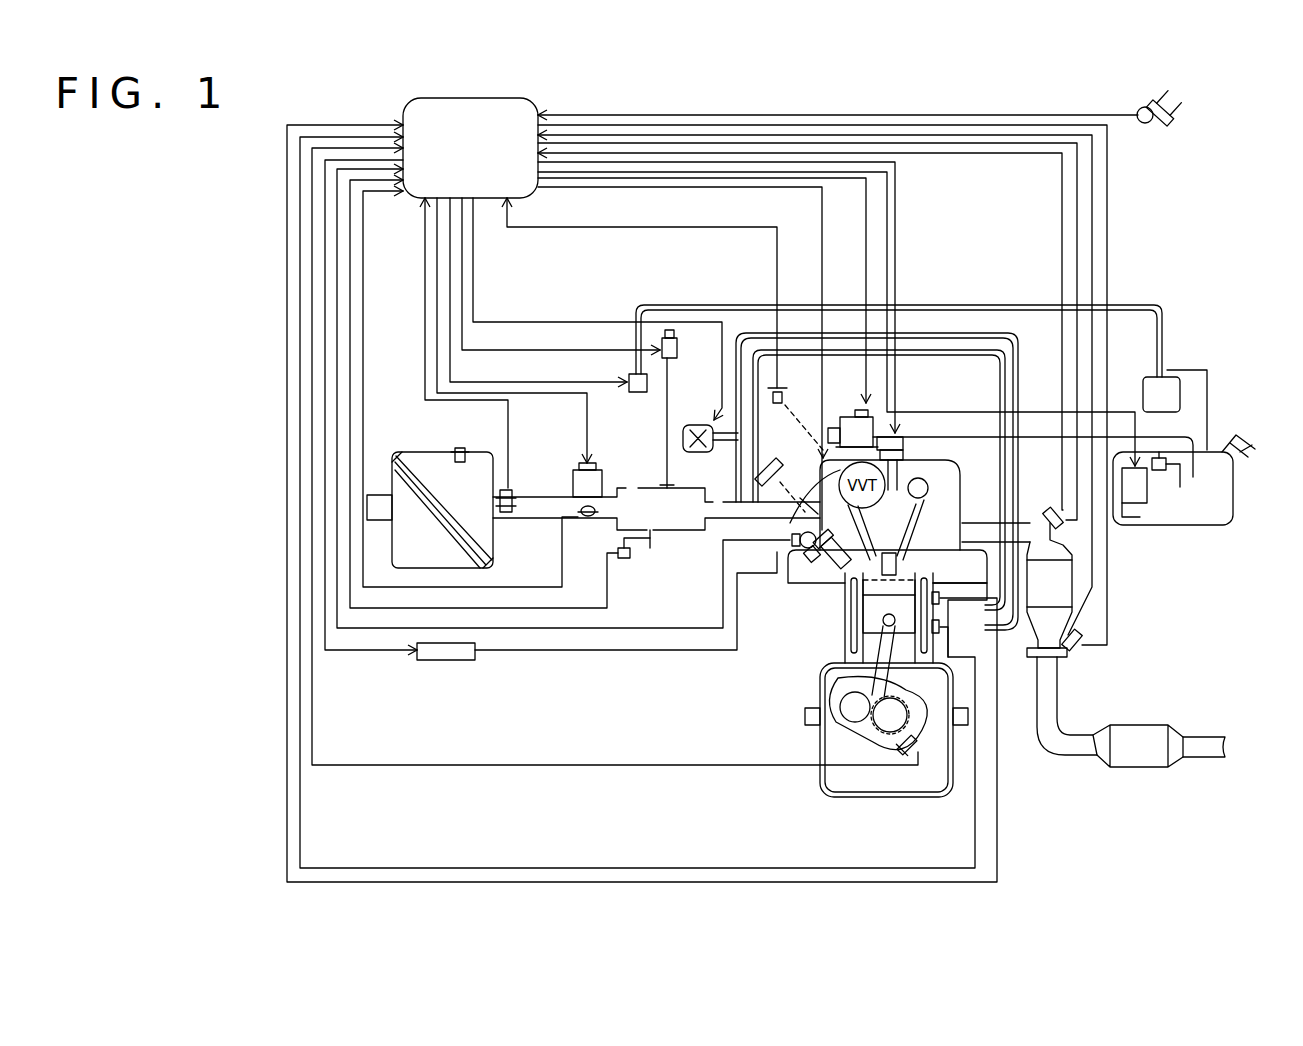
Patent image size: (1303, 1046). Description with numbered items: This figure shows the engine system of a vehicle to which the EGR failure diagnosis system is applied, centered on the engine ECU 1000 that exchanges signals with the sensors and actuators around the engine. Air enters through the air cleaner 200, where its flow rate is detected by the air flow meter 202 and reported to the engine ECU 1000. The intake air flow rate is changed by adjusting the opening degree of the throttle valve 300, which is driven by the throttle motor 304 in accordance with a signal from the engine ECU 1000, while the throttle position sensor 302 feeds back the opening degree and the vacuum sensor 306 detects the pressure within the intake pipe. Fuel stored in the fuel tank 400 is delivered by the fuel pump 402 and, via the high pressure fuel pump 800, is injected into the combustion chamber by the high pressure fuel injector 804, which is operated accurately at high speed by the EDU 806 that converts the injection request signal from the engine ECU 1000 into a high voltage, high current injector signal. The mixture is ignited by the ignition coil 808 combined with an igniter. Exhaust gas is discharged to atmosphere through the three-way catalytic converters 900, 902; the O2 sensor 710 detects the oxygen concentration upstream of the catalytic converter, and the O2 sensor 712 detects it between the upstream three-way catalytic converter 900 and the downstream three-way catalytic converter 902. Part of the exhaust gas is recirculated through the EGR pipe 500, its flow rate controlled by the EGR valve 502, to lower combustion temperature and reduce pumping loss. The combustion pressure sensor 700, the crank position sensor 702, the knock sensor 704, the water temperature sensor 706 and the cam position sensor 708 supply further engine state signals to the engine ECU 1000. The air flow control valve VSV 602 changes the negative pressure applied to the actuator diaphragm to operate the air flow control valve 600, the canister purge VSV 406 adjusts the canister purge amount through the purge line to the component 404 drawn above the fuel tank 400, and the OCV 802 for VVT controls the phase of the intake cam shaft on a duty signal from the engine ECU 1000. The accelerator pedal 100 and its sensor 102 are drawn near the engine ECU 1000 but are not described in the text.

The engine ECU 1000 is at (492, 98).
The accelerator pedal 100 is at (1163, 125).
The accelerator pedal position sensor 102 is at (1138, 108).
The air cleaner 200 is at (425, 452).
The air flow meter 202 is at (512, 490).
The throttle valve 300 is at (555, 520).
The throttle position sensor 302 is at (590, 528).
The throttle motor 304 is at (585, 463).
The vacuum sensor 306 is at (628, 560).
The fuel tank 400 is at (1200, 526).
The fuel pump 402 is at (1147, 490).
The purge control valve 404 is at (1180, 396).
The canister purge VSV 406 is at (627, 380).
The EGR pipe 500 is at (960, 335).
The EGR valve 502 is at (685, 440).
The air flow control valve 600 is at (770, 470).
The air flow control valve VSV 602 is at (670, 330).
The combustion pressure sensor 700 is at (805, 552).
The crank position sensor 702 is at (900, 752).
The knock sensor 704 is at (940, 627).
The water temperature sensor 706 is at (940, 598).
The cam position sensor 708 is at (785, 396).
The O2 sensor 710 is at (1053, 510).
The O2 sensor 712 is at (1075, 650).
The high pressure fuel pump 800 is at (855, 420).
The OCV for VVT 802 is at (790, 523).
The high pressure fuel injector 804 is at (838, 570).
The EDU 806 is at (455, 660).
The ignition coil 808 is at (897, 440).
The three-way catalytic converter 900 is at (1055, 588).
The three-way catalytic converter 902 is at (1140, 770).